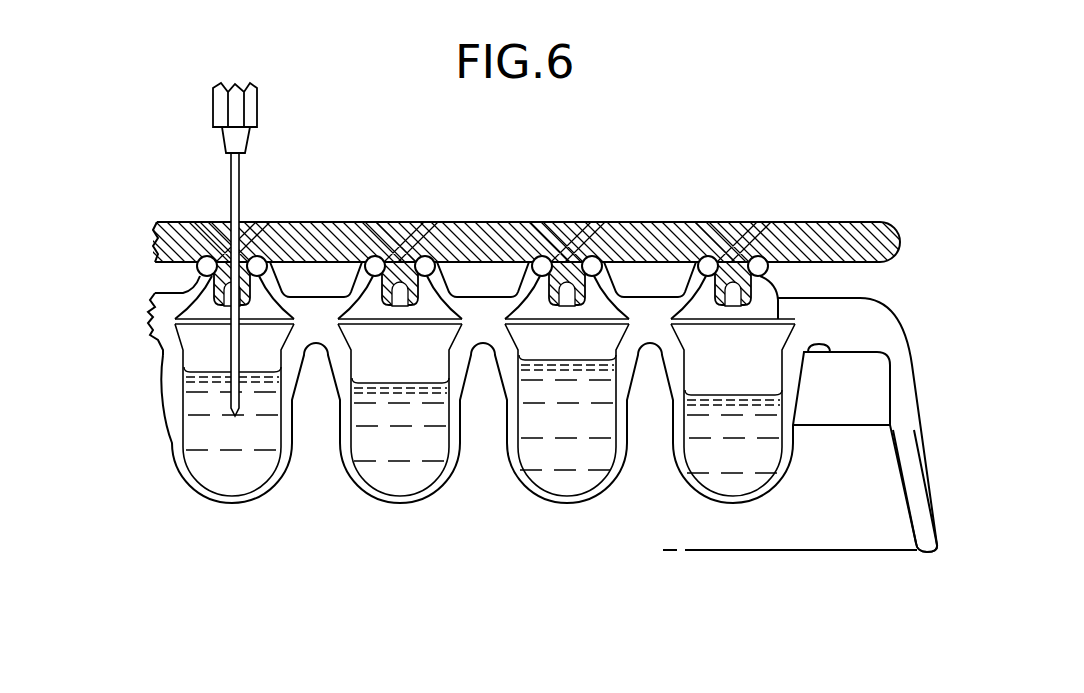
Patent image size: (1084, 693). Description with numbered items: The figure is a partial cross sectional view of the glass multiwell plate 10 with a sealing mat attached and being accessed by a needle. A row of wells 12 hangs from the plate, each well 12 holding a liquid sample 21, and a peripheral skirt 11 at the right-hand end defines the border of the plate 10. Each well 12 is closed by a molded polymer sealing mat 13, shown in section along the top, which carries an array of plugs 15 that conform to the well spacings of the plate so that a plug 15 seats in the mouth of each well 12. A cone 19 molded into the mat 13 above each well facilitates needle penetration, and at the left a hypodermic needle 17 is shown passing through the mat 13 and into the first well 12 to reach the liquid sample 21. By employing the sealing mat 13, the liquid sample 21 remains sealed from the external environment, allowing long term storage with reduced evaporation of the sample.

The multiwell plate 10 is at (803, 191).
The peripheral skirt 11 is at (923, 460).
The well 12 is at (757, 482).
The sealing mat 13 is at (526, 222).
The plug 15 is at (766, 274).
The hypodermic needle 17 is at (230, 347).
The cone 19 is at (401, 222).
The liquid sample 21 is at (218, 470).